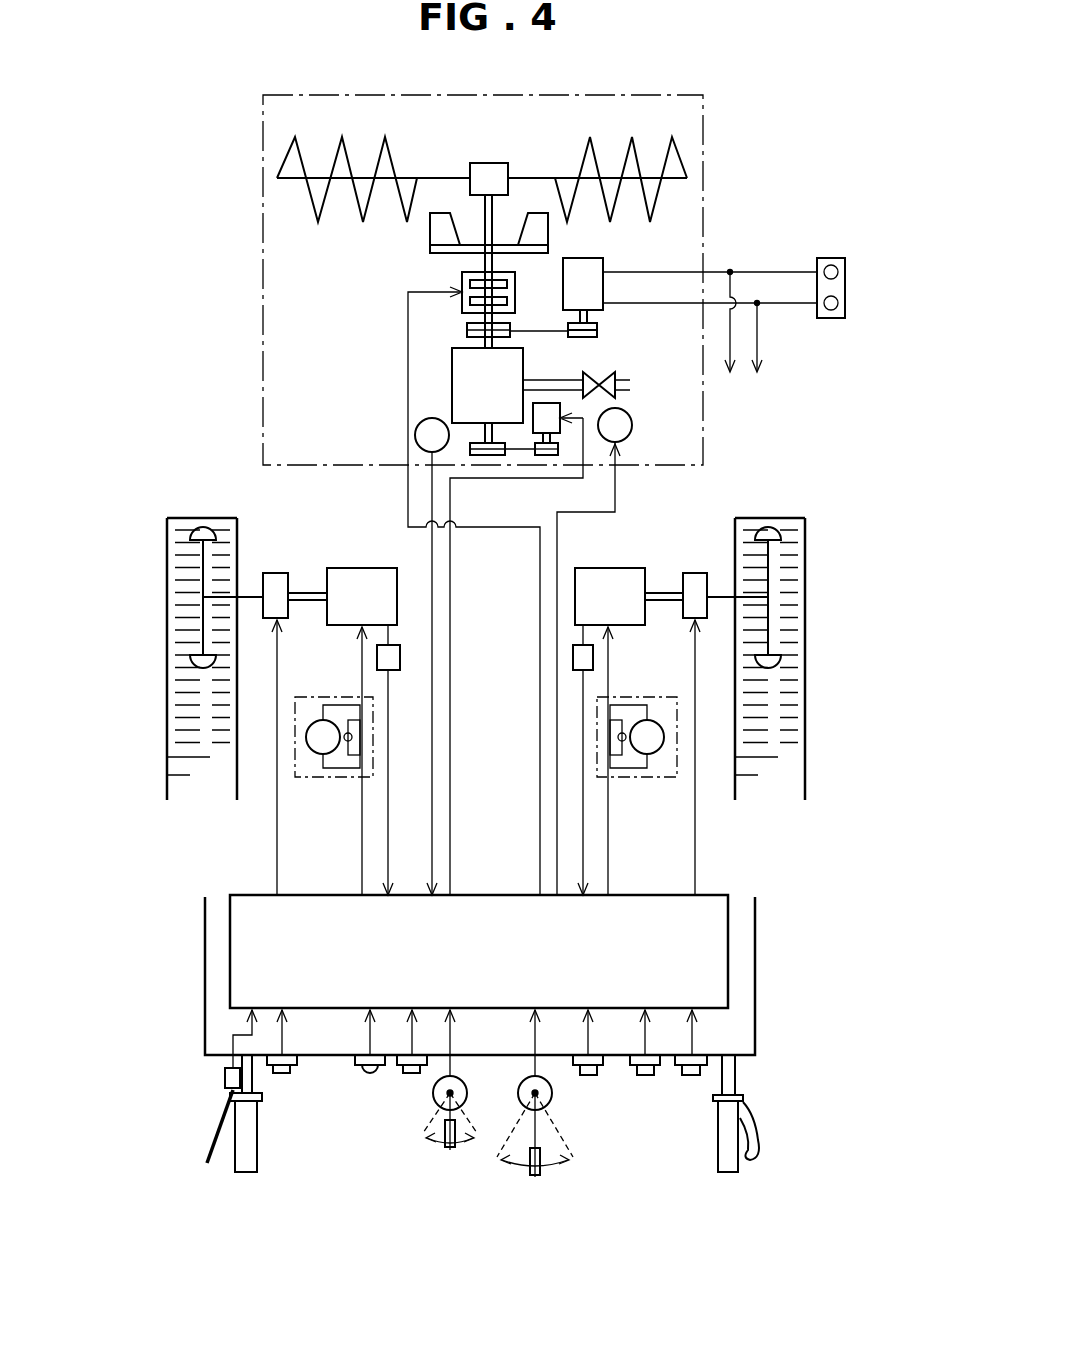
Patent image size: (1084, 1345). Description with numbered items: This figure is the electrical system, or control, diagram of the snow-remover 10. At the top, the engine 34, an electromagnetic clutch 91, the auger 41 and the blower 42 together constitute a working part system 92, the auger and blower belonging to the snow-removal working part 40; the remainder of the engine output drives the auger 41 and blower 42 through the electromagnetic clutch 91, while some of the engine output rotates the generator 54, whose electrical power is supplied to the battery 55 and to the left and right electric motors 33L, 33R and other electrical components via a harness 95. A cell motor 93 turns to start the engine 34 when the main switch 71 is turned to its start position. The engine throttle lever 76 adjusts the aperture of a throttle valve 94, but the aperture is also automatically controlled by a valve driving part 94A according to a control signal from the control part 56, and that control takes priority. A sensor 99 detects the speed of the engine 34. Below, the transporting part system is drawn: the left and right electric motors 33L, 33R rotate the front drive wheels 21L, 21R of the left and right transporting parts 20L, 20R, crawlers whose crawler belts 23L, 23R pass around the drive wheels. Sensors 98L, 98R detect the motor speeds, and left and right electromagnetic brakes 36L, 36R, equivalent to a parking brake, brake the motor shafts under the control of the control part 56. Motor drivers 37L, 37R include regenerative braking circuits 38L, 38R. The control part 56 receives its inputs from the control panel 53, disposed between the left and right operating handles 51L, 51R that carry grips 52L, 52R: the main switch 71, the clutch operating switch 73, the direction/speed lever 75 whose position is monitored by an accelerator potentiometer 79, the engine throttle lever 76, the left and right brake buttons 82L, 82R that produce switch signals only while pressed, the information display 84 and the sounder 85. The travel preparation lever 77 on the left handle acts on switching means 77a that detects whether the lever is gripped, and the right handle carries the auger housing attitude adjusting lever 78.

The snow-remover 10 is at (152, 182).
The left transporting part 20L is at (176, 503).
The right transporting part 20R is at (822, 543).
The front drive wheel 21L is at (200, 562).
The front drive wheel 21R is at (775, 577).
The crawler belt 23L is at (185, 692).
The crawler belt 23R is at (790, 732).
The left electric motor 33L is at (360, 578).
The right electric motor 33R is at (608, 580).
The engine 34 is at (462, 383).
The left electromagnetic brake 36L is at (277, 580).
The right electromagnetic brake 36R is at (695, 580).
The motor driver 37L is at (295, 758).
The motor driver 37R is at (679, 758).
The regenerative braking circuit 38L is at (322, 755).
The regenerative braking circuit 38R is at (650, 755).
The working part 40 is at (295, 223).
The auger 41 is at (387, 166).
The blower 42 is at (440, 228).
The left operating handle 51L is at (240, 1040).
The right operating handle 51R is at (740, 1072).
The grip 52L is at (245, 1165).
The grip 52R is at (742, 1163).
The control panel 53 is at (755, 938).
The generator 54 is at (582, 270).
The battery 55 is at (832, 258).
The control part 56 is at (710, 897).
The main switch 71 is at (588, 1077).
The clutch operating switch 73 is at (645, 1077).
The direction/speed lever 75 is at (535, 1178).
The engine throttle lever 76 is at (450, 1152).
The travel preparation lever 77 is at (210, 1120).
The switching means 77a is at (225, 1078).
The auger housing attitude adjusting lever 78 is at (762, 1130).
The accelerator potentiometer 79 is at (520, 1095).
The left brake button 82L is at (282, 1075).
The right brake button 82R is at (692, 1077).
The information display 84 is at (368, 1075).
The sounder 85 is at (412, 1075).
The electromagnetic clutch 91 is at (462, 280).
The working part system 92 is at (703, 130).
The cell motor 93 is at (543, 413).
The throttle valve 94 is at (600, 376).
The valve driving part 94A is at (632, 425).
The harness 95 is at (757, 376).
The sensor 98L is at (377, 658).
The sensor 98R is at (593, 658).
The sensor 99 is at (420, 436).